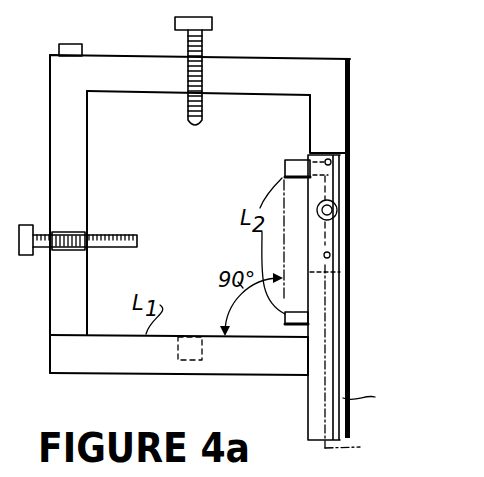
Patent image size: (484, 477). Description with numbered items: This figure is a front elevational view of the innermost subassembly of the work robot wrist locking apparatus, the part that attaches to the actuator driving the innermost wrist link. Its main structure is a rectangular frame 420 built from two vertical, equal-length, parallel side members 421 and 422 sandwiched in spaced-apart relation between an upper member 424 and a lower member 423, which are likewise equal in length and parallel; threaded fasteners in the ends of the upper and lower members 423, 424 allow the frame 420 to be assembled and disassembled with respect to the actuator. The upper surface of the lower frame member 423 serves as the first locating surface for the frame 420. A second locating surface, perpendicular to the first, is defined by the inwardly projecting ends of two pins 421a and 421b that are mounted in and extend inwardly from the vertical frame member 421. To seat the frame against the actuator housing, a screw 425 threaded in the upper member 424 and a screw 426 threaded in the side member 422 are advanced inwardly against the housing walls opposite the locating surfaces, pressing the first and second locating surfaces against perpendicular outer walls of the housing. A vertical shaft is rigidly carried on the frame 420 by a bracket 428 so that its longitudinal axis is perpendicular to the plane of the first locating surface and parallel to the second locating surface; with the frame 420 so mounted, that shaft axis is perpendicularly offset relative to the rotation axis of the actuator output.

The rectangular frame 420 is at (252, 234).
The vertical side member 421 is at (340, 135).
The pin 421a is at (295, 163).
The pin 421b is at (287, 327).
The vertical side member 422 is at (75, 164).
The lower frame member 423 is at (137, 361).
The upper frame member 424 is at (286, 72).
The screw 425 is at (212, 22).
The screw 426 is at (35, 232).
The bracket 428 is at (346, 262).